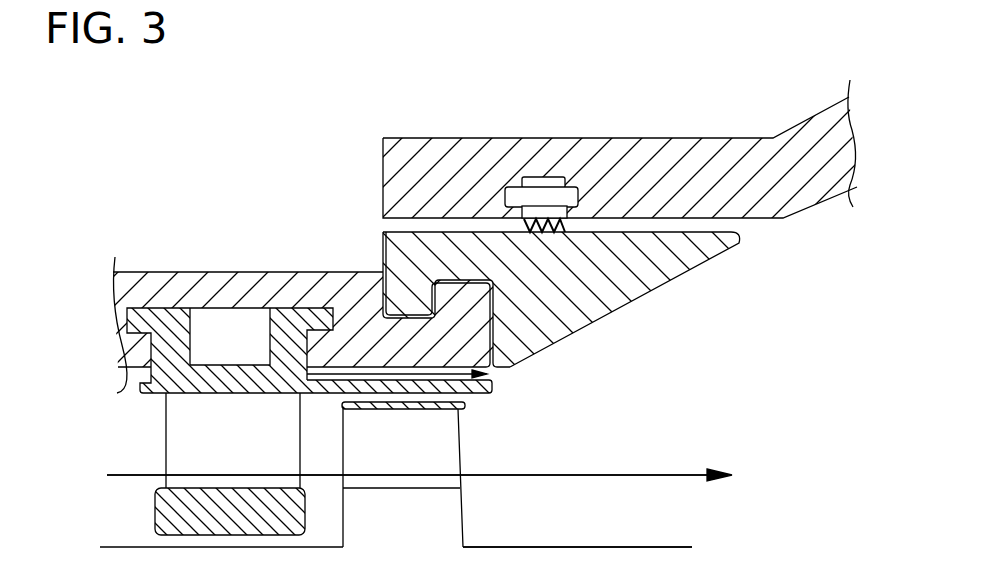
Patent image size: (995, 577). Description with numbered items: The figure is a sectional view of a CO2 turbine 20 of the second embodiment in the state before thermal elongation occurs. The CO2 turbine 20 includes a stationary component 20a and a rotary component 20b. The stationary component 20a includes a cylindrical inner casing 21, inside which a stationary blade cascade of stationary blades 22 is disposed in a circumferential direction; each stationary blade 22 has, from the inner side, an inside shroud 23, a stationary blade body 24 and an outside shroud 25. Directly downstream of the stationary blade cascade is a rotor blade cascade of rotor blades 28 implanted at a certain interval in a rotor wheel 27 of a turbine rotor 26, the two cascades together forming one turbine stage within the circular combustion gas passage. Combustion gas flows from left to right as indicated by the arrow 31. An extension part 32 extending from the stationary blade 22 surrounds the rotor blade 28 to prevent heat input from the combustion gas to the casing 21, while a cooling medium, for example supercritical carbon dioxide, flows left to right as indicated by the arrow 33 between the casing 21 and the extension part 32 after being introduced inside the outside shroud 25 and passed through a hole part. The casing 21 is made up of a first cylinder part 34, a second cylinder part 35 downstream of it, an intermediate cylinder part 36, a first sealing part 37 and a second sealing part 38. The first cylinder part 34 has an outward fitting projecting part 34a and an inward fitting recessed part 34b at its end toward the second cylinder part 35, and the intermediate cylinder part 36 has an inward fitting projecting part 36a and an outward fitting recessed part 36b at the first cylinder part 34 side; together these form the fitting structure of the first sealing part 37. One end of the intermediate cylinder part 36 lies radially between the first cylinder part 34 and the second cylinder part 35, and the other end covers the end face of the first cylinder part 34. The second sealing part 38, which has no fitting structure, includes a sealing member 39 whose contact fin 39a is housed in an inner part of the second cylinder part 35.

The CO2 turbine 20 is at (130, 152).
The stationary component 20a is at (754, 298).
The rotary component 20b is at (754, 547).
The inner casing 21 is at (82, 288).
The stationary blade 22 is at (160, 456).
The inside shroud 23 is at (175, 515).
The stationary blade body 24 is at (180, 428).
The outside shroud 25 is at (192, 388).
The turbine rotor 26 is at (562, 558).
The rotor wheel 27 is at (450, 513).
The rotor blade 28 is at (450, 452).
The arrow 31 is at (638, 472).
The extension part 32 is at (492, 391).
The arrow 33 is at (490, 372).
The first cylinder part 34 is at (190, 288).
The fitting projecting part 34a is at (477, 300).
The fitting recessed part 34b is at (385, 325).
The second cylinder part 35 is at (728, 147).
The intermediate cylinder part 36 is at (673, 260).
The fitting projecting part 36a is at (412, 303).
The fitting recessed part 36b is at (458, 297).
The first sealing part 37 is at (374, 261).
The second sealing part 38 is at (597, 190).
The sealing member 39 is at (540, 168).
The contact fin 39a is at (568, 223).